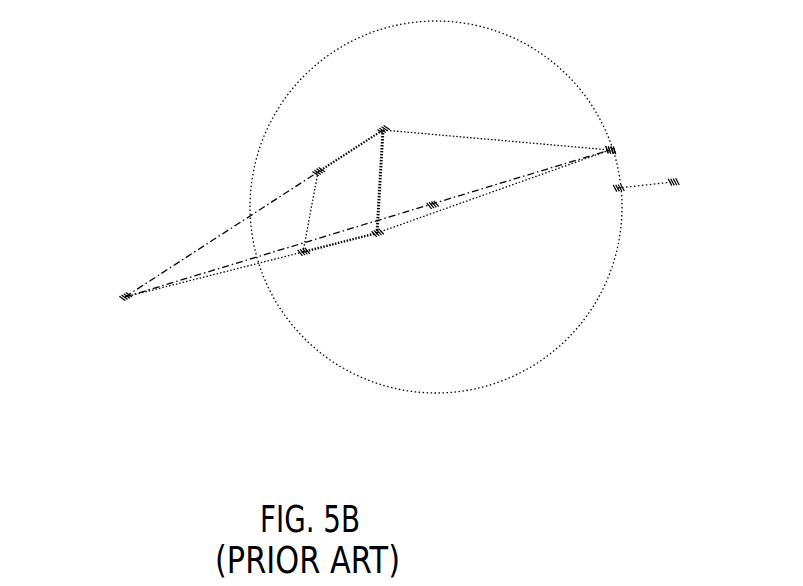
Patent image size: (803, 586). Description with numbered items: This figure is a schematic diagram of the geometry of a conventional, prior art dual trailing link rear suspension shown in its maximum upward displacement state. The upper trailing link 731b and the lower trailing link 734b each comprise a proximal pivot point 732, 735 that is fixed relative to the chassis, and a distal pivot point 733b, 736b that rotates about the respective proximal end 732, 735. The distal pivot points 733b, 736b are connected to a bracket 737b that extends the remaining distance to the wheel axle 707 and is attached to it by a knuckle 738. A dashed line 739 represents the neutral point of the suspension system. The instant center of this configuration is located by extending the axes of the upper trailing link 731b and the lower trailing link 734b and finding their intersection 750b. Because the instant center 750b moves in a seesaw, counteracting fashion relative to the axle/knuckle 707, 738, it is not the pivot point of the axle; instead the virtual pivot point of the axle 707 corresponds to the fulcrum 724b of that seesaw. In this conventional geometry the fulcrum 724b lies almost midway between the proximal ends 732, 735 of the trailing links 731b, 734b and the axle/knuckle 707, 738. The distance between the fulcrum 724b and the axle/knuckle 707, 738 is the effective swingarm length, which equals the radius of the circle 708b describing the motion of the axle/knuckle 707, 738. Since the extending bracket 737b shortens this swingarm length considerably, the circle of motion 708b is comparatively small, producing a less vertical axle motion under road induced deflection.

The instant center intersection 750b is at (125, 297).
The proximal pivot point 732 is at (318, 172).
The upper trailing link 731b is at (347, 151).
The distal pivot point 733b is at (383, 130).
The bracket 737b is at (483, 138).
The wheel axle 707 is at (610, 150).
The knuckle 738 is at (614, 169).
The dashed line 739 is at (673, 182).
The circle of motion 708b is at (577, 325).
The proximal pivot point 735 is at (303, 252).
The lower trailing link 734b is at (347, 243).
The distal pivot point 736b is at (377, 233).
The virtual pivot point fulcrum 724b is at (432, 206).